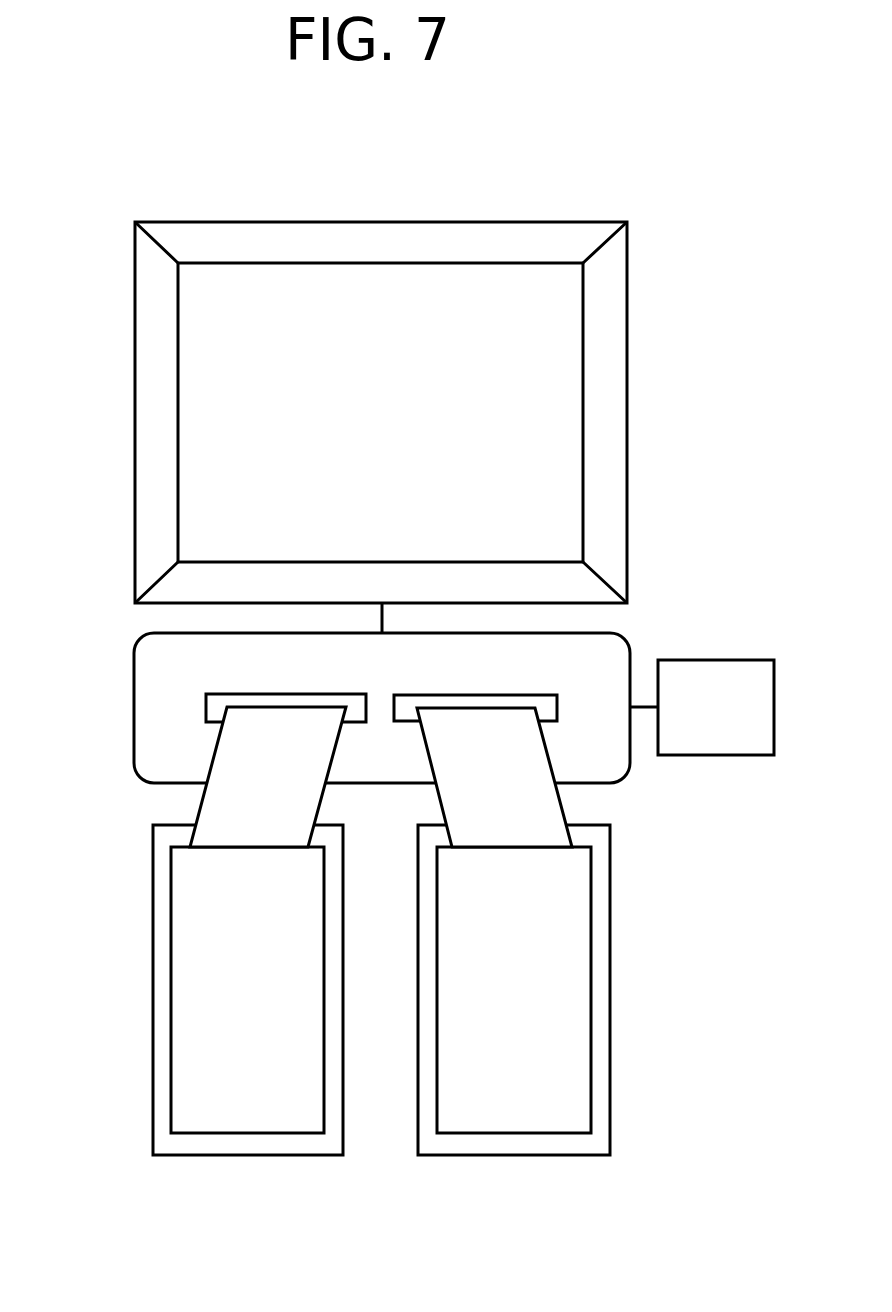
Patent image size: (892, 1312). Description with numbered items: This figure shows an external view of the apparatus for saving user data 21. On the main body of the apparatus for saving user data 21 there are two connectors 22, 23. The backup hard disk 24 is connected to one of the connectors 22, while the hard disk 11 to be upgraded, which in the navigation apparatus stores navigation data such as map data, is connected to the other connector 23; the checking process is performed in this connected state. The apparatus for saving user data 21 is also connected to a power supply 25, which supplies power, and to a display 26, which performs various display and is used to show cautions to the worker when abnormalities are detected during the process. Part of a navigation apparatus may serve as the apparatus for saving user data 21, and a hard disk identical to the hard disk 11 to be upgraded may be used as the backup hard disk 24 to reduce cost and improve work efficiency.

The display 26 is at (627, 423).
The apparatus for saving user data 21 is at (134, 718).
The power supply 25 is at (725, 660).
The backup hard disk 24 is at (245, 1157).
The hard disk 11 is at (512, 1157).
The connector 22 is at (199, 803).
The connector 23 is at (562, 803).